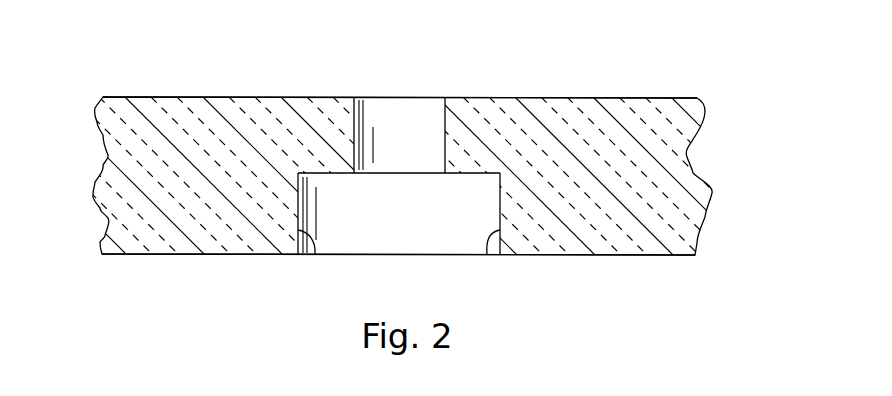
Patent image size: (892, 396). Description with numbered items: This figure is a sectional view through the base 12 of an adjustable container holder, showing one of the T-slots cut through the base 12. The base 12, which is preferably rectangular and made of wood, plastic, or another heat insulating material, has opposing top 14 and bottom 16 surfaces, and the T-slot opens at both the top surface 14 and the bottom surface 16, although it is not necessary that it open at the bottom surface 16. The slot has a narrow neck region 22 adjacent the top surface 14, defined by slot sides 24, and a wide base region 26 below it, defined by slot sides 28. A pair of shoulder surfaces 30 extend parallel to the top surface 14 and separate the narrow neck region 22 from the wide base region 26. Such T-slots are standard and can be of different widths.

The base 12 is at (698, 111).
The top surface 14 is at (578, 92).
The bottom surface 16 is at (578, 261).
The narrow neck region 22 is at (390, 143).
The slot sides 24 is at (355, 122).
The wide base region 26 is at (391, 218).
The slot sides 28 is at (312, 254).
The shoulder surfaces 30 is at (327, 175).